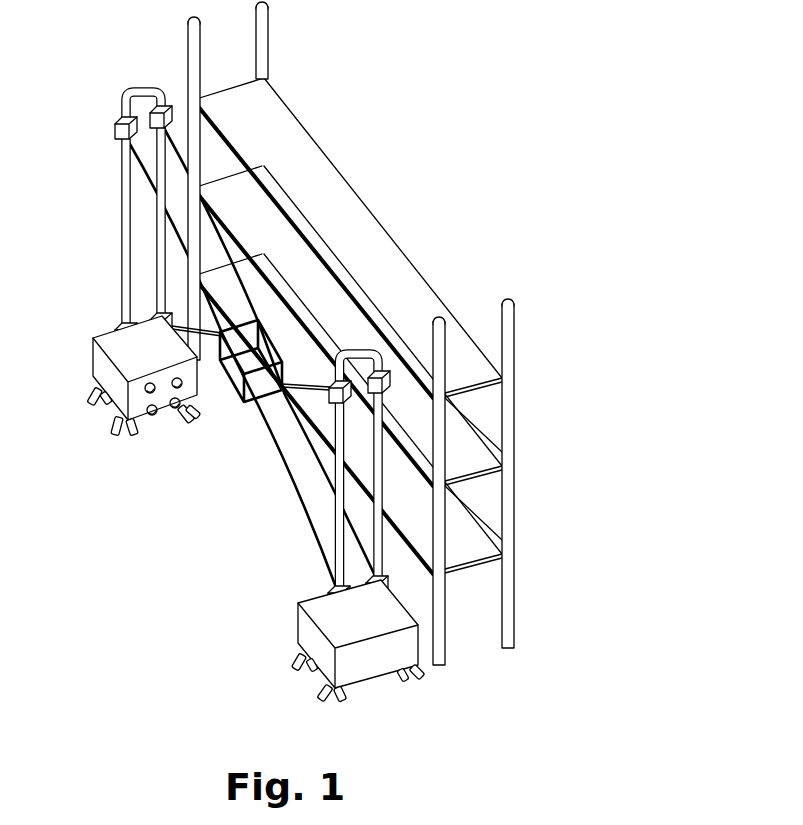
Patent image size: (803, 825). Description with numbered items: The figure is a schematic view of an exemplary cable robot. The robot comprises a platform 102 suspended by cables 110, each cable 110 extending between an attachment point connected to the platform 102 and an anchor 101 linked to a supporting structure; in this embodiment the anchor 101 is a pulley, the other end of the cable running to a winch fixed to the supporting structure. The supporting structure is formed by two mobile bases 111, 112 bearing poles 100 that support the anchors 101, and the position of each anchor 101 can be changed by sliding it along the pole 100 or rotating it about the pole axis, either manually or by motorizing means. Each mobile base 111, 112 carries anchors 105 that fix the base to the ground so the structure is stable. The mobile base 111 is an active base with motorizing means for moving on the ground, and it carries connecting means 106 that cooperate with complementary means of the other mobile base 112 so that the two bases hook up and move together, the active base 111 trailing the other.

The poles 100 is at (121, 257).
The anchor 101 is at (115, 128).
The platform 102 is at (238, 392).
The anchors 105 is at (107, 420).
The connecting means 106 is at (152, 420).
The cables 110 is at (290, 483).
The mobile base 111 is at (106, 306).
The mobile base 112 is at (294, 566).